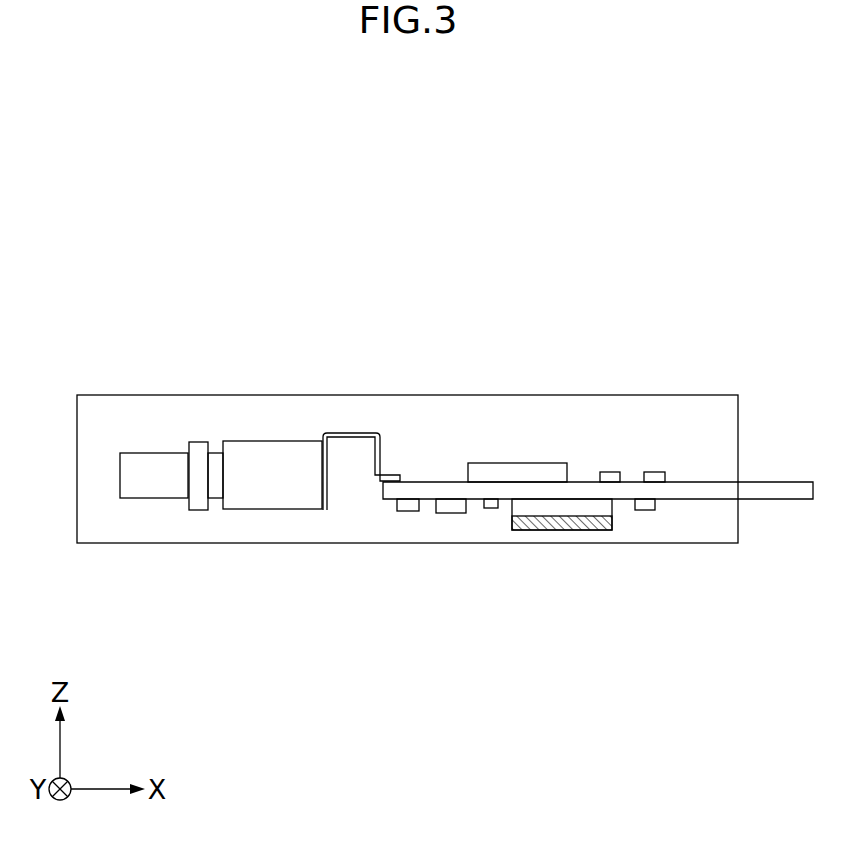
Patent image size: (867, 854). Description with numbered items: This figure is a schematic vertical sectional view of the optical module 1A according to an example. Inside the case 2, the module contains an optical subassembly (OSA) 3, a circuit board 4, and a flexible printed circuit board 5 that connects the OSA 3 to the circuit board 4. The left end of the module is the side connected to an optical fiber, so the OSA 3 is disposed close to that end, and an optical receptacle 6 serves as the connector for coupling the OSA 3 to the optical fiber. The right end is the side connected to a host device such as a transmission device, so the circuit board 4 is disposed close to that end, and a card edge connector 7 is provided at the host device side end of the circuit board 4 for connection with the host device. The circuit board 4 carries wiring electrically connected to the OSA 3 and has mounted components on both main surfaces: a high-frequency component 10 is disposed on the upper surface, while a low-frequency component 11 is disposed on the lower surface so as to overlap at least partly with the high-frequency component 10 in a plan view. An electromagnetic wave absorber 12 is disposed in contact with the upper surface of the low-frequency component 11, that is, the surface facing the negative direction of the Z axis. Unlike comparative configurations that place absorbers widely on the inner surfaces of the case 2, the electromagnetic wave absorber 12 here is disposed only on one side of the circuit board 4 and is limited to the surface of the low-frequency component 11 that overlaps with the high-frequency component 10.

The optical module 1A is at (74, 333).
The case 2 is at (192, 395).
The optical subassembly (OSA) 3 is at (268, 441).
The circuit board 4 is at (697, 482).
The flexible printed circuit (FPC) board 5 is at (352, 433).
The optical receptacle 6 is at (148, 453).
The card edge connector 7 is at (771, 482).
The high-frequency component 10 is at (497, 463).
The low-frequency component 11 is at (607, 512).
The electromagnetic wave absorber 12 is at (553, 523).